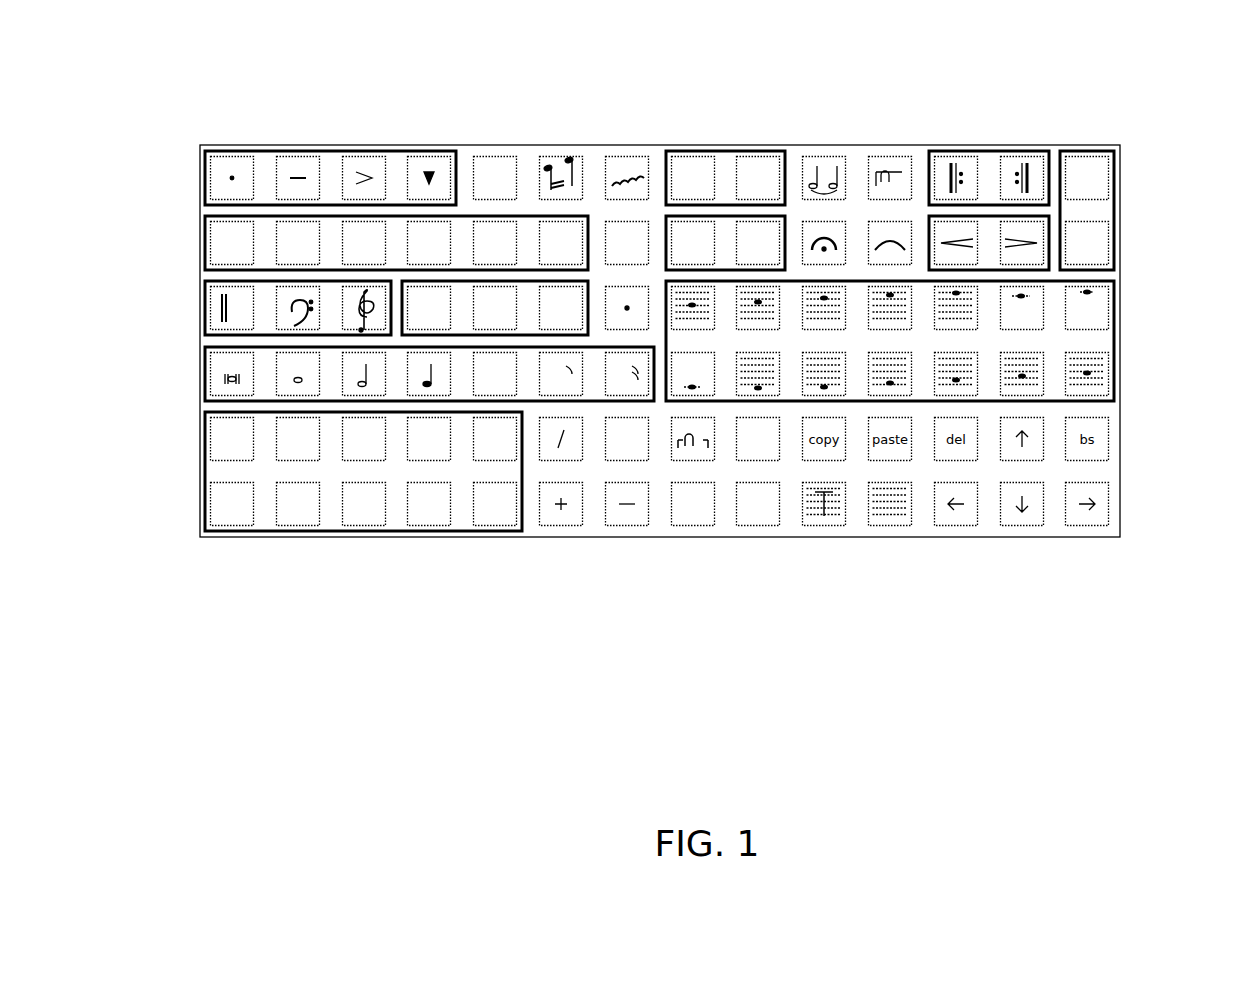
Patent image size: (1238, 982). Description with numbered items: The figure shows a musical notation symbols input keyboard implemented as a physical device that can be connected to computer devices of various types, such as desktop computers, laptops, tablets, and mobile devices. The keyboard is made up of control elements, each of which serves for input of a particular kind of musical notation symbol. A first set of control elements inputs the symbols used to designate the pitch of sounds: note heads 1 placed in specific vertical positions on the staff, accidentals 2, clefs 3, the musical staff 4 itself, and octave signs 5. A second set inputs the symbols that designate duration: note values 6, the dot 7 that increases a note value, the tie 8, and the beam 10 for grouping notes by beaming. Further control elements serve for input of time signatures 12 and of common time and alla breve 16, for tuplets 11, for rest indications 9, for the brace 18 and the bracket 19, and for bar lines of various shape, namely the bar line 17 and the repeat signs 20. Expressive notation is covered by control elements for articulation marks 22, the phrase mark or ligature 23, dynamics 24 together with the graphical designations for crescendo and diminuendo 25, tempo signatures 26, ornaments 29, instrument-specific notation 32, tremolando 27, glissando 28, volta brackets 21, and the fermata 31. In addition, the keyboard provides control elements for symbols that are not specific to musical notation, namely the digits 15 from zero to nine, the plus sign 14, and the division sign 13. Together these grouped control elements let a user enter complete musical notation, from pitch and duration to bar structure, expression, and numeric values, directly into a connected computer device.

The note heads control element 1 is at (1122, 342).
The accidentals control element 2 is at (497, 336).
The clefs control element 3 is at (206, 305).
The musical staff control element 4 is at (912, 524).
The octave signs control element 5 is at (1122, 212).
The note values control element 6 is at (206, 376).
The note value increasing dot control element 7 is at (614, 331).
The tie control element 8 is at (805, 157).
The rest indication control element 9 is at (777, 458).
The beam control element 10 is at (648, 228).
The tuplet control element 11 is at (717, 458).
The time signature control element 12 is at (645, 528).
The division sign control element 13 is at (579, 459).
The plus sign control element 14 is at (545, 515).
The digits control element 15 is at (206, 474).
The common time and alla breve control element 16 is at (612, 457).
The bar line control element 17 is at (845, 524).
The brace control element 18 is at (680, 528).
The bracket control element 19 is at (745, 528).
The repeat signs control element 20 is at (988, 150).
The volta brackets control element 21 is at (900, 157).
The articulation marks control element 22 is at (205, 181).
The phrase mark control element 23 is at (935, 222).
The dynamics control element 24 is at (205, 243).
The crescendo and diminuendo control element 25 is at (1052, 152).
The tempo signatures control element 26 is at (720, 222).
The tremolando control element 27 is at (542, 157).
The glissando control element 28 is at (607, 157).
The ornaments control element 29 is at (475, 157).
The fermata control element 31 is at (845, 228).
The instrument-specific notation control element 32 is at (765, 150).